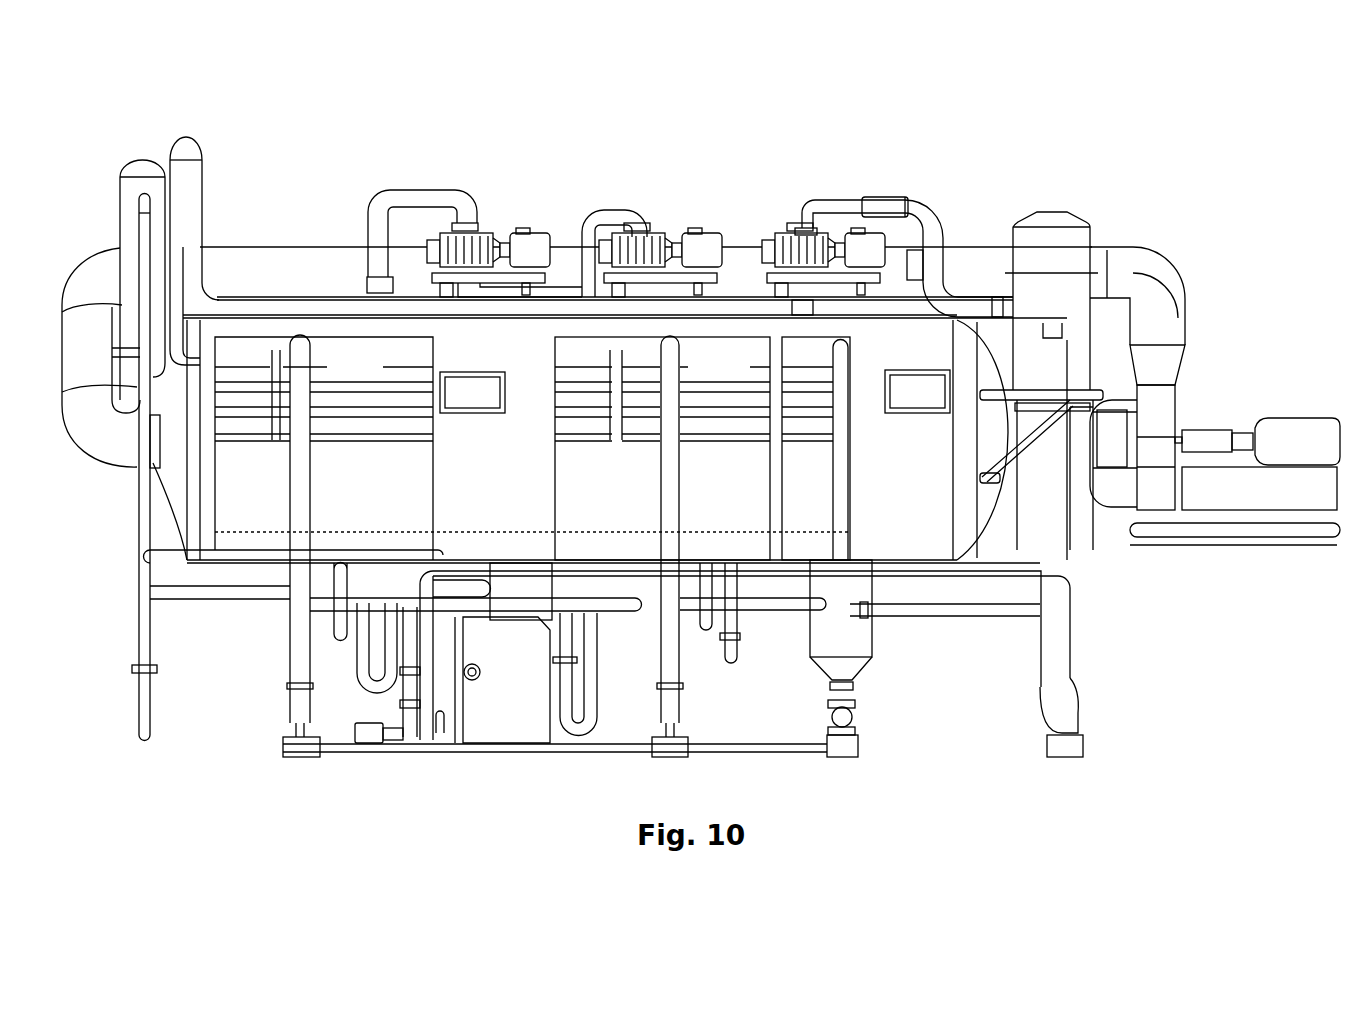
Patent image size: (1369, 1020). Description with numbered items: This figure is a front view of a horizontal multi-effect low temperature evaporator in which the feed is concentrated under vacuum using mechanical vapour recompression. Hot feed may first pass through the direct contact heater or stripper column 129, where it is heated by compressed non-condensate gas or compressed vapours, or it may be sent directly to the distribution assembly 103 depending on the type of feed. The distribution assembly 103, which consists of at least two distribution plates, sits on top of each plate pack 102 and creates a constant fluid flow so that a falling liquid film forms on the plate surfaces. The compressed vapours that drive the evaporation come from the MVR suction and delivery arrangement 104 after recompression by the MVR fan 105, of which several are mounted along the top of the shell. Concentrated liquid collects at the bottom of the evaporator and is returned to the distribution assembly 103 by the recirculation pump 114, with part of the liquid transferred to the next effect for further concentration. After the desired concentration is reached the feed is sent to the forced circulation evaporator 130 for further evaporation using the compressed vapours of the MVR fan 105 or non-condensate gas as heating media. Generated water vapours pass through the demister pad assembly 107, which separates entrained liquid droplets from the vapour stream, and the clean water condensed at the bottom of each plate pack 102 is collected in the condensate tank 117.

The plate pack 102 is at (400, 475).
The distribution assembly 103 is at (380, 372).
The MVR suction and delivery arrangement 104 is at (1266, 414).
The MVR fan 105 is at (782, 222).
The demister pad assembly 107 is at (268, 475).
The recirculation pump 114 is at (278, 708).
The condensate tank 117 is at (525, 732).
The direct contact heater/stripper column 129 is at (132, 158).
The forced circulation evaporator 130 is at (1050, 213).